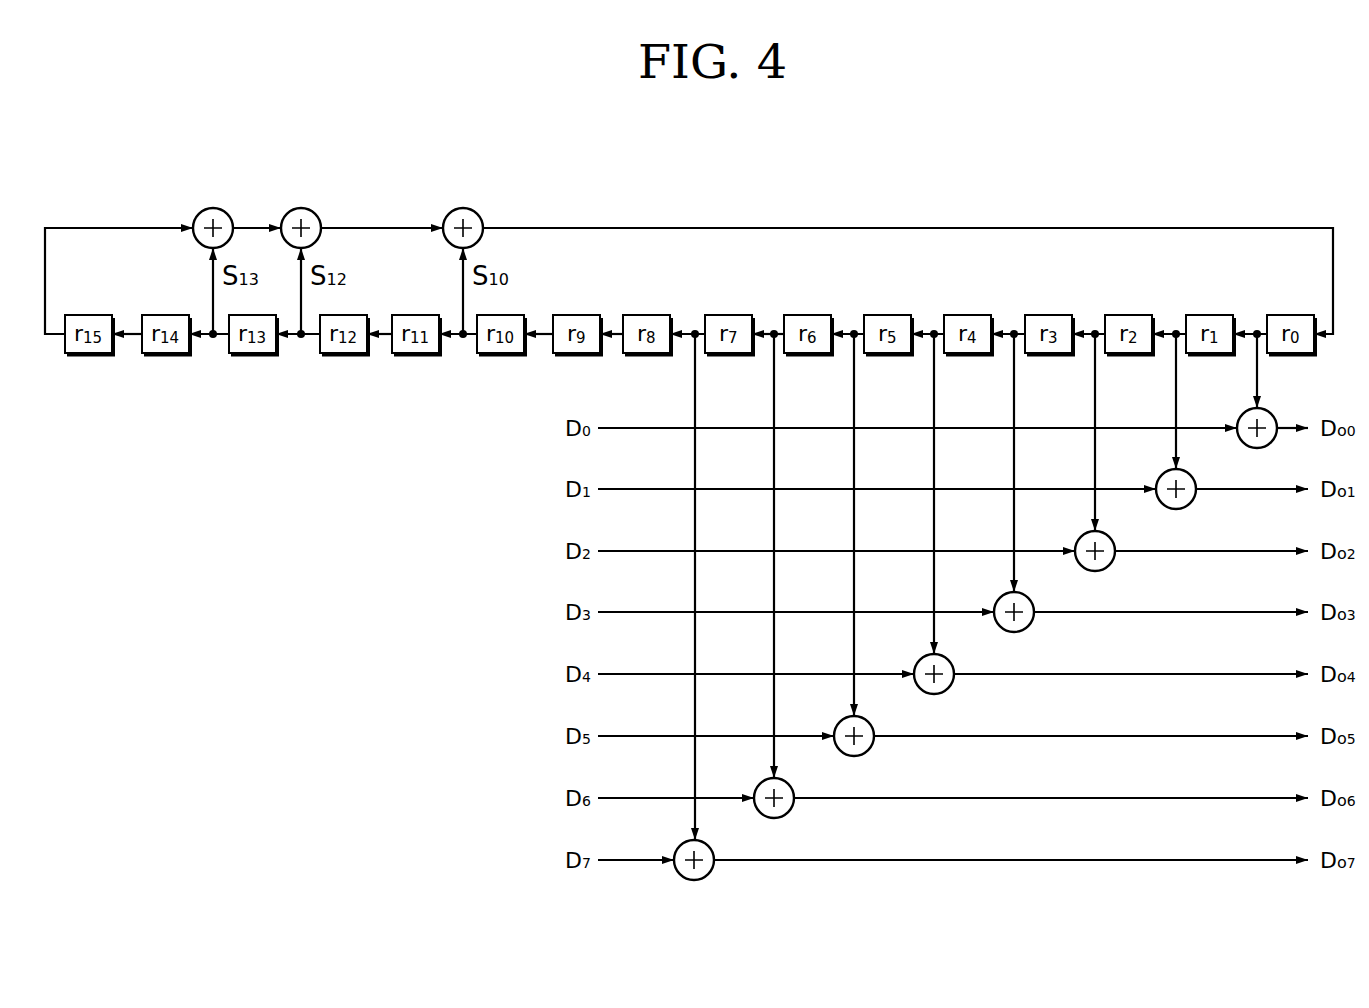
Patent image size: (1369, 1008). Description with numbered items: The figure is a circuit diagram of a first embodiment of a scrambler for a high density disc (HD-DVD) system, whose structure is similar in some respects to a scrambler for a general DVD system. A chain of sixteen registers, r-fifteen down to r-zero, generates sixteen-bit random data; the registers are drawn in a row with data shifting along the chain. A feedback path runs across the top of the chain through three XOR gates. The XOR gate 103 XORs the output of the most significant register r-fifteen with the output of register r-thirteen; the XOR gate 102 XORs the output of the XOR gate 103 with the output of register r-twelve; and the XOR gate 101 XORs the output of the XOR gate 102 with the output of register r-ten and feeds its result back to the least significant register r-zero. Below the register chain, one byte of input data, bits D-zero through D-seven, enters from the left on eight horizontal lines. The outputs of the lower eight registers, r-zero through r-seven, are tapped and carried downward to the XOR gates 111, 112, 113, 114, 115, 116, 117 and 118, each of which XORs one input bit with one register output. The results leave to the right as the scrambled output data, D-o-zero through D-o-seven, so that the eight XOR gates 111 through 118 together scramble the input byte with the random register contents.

The XOR gate 101 is at (462, 208).
The XOR gate 102 is at (300, 208).
The XOR gate 103 is at (212, 208).
The XOR gate 111 is at (1272, 414).
The XOR gate 112 is at (1192, 478).
The XOR gate 113 is at (1111, 540).
The XOR gate 114 is at (1030, 601).
The XOR gate 115 is at (950, 663).
The XOR gate 116 is at (870, 725).
The XOR gate 117 is at (790, 787).
The XOR gate 118 is at (710, 849).